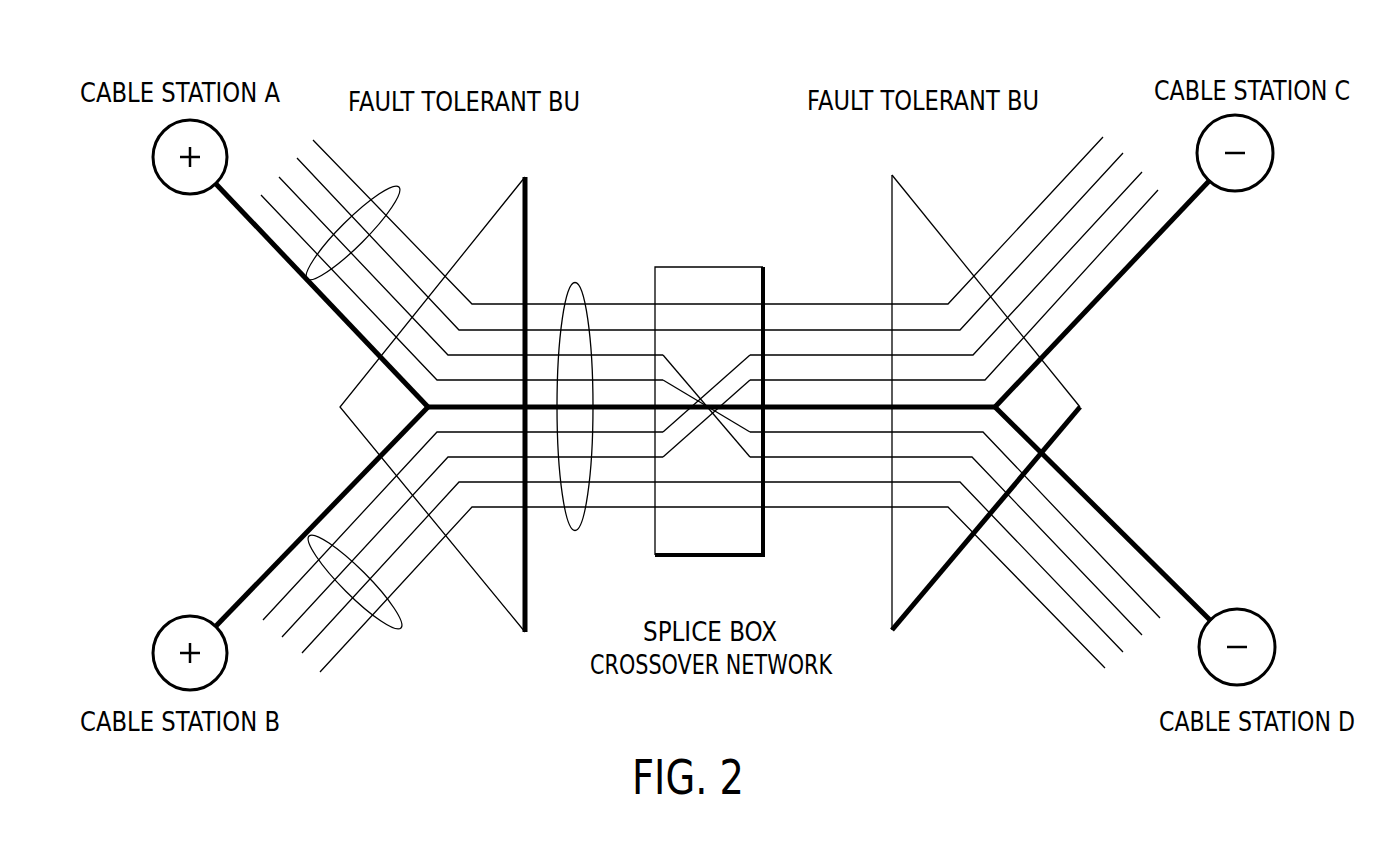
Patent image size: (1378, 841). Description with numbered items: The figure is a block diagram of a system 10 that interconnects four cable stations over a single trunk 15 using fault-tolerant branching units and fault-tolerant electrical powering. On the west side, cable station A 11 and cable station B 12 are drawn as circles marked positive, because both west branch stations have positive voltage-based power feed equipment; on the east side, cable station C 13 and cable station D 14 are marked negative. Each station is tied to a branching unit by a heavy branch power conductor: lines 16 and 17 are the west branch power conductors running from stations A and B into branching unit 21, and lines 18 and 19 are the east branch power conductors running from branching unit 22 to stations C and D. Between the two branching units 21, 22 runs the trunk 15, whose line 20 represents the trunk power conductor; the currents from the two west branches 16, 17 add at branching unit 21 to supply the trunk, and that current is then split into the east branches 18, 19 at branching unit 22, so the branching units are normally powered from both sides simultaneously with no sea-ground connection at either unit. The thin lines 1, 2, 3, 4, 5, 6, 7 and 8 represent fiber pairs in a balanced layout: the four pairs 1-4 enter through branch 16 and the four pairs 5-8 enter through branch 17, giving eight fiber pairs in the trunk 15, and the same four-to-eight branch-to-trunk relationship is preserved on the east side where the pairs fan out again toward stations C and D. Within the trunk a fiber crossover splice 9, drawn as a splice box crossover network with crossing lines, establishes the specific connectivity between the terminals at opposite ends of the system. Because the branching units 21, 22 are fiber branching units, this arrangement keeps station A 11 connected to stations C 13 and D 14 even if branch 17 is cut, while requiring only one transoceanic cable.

The system 10 is at (687, 43).
The cable station A 11 is at (154, 179).
The cable station B 12 is at (154, 628).
The cable station C 13 is at (1271, 178).
The cable station D 14 is at (1273, 628).
The branch power conductor 16 is at (335, 312).
The branch power conductor 17 is at (335, 500).
The branch power conductor 18 is at (1087, 307).
The branch power conductor 19 is at (1088, 497).
The trunk power conductor 20 is at (834, 411).
The branching unit 21 is at (527, 210).
The branching unit 22 is at (927, 210).
The trunk 15 is at (567, 283).
The fiber crossover splice 9 is at (710, 267).
The fiber pair 1 is at (709, 208).
The fiber pair 2 is at (708, 230).
The fiber pair 3 is at (719, 395).
The fiber pair 4 is at (699, 412).
The fiber pair 5 is at (701, 398).
The fiber pair 6 is at (721, 415).
The fiber pair 7 is at (710, 583).
The fiber pair 8 is at (710, 604).
The fiber pairs in branch 16 1-4 is at (400, 193).
The fiber pairs in branch 17 5-8 is at (393, 612).